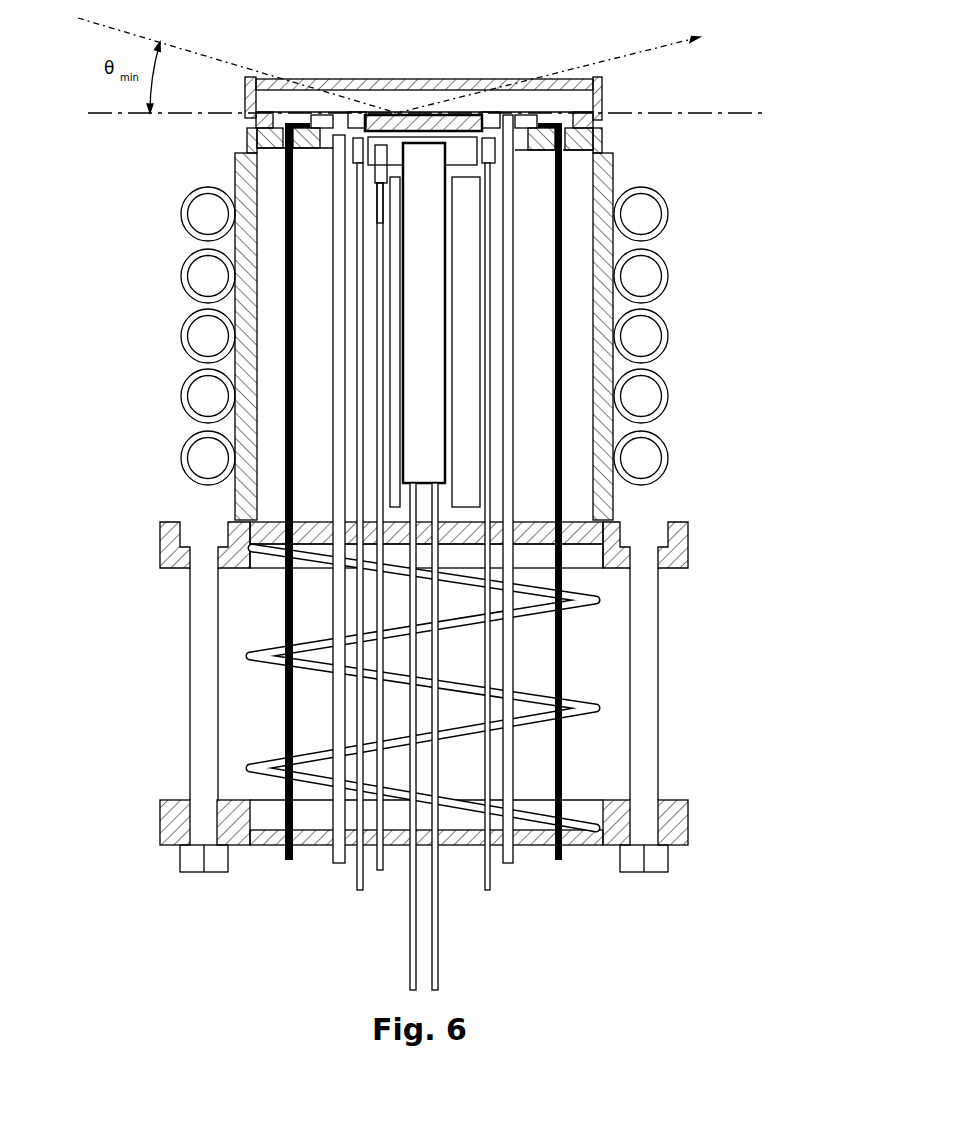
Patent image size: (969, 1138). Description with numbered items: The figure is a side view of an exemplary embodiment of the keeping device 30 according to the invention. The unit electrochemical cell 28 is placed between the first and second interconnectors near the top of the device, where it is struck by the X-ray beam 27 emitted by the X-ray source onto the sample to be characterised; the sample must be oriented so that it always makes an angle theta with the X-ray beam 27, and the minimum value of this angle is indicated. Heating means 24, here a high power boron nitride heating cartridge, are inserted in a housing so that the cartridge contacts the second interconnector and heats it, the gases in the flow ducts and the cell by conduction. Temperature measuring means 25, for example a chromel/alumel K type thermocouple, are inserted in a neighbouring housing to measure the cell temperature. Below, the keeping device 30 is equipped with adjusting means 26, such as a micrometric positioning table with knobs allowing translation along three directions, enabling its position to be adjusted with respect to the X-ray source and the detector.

The heating means 24 is at (423, 450).
The temperature measuring means 25 is at (385, 211).
The adjusting means 26 is at (700, 520).
The X-ray beam 27 is at (490, 106).
The unit electrochemical cell 28 is at (418, 114).
The keeping device 30 is at (708, 250).